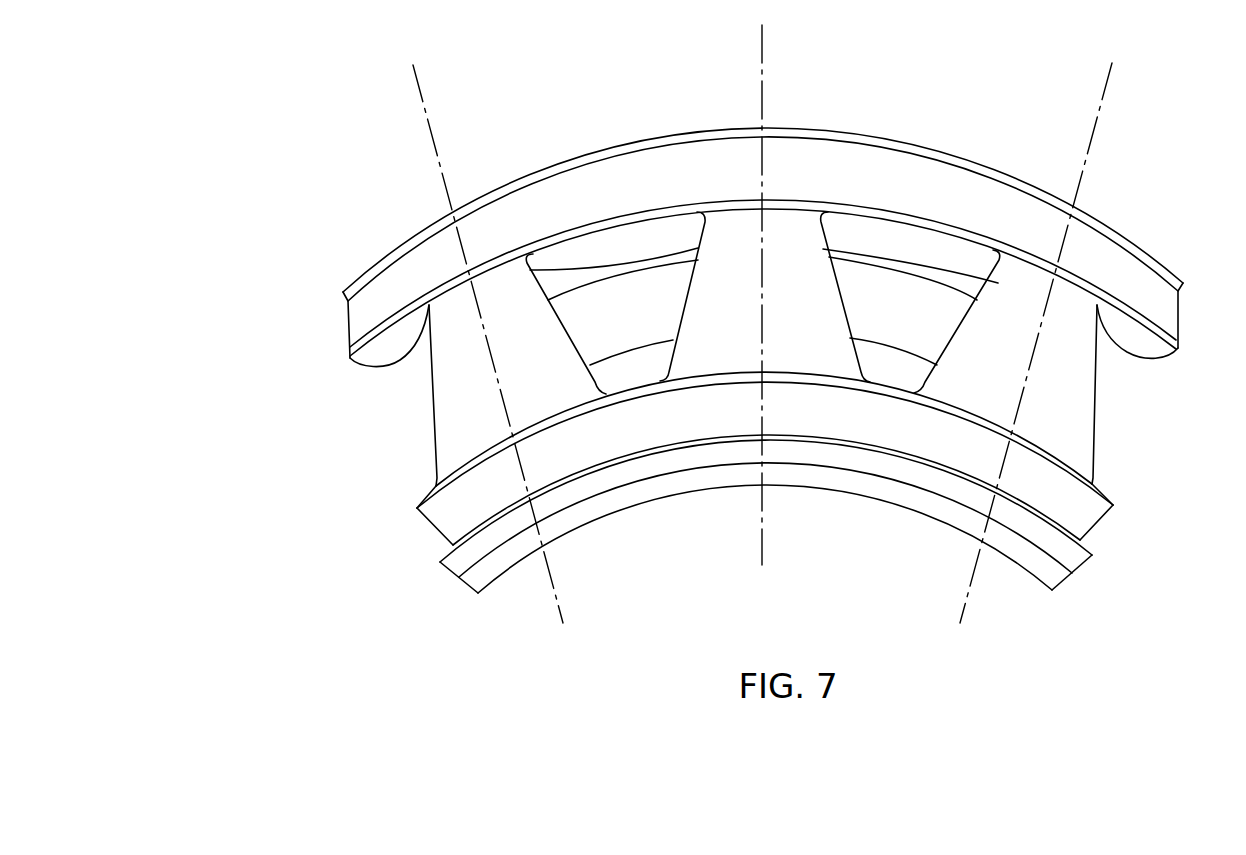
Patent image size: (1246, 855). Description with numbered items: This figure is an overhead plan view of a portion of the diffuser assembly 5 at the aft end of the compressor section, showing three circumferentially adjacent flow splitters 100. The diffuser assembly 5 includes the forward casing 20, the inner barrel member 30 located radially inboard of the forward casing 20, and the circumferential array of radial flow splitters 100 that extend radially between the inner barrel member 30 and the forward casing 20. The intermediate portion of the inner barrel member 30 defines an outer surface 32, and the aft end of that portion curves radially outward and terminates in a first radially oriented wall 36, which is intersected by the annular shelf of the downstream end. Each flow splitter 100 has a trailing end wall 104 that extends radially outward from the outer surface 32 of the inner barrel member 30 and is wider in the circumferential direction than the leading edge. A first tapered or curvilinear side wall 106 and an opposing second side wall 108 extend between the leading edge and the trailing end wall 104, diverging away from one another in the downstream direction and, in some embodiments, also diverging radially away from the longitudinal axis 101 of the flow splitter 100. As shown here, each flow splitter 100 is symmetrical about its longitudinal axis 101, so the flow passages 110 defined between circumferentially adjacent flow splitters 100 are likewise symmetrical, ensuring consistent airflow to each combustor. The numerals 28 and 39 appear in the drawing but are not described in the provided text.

The diffuser assembly 5 is at (282, 118).
The forward casing 20 is at (328, 320).
The yoke 28 is at (433, 258).
The inner barrel member 30 is at (420, 553).
The outer surface 32 is at (603, 310).
The first radially oriented wall 36 is at (438, 512).
The inner ring flange 39 is at (457, 563).
The flow splitter 100 is at (791, 232).
The longitudinal axis 101 is at (563, 598).
The trailing end wall 104 is at (437, 367).
The first side wall 106 is at (435, 410).
The second side wall 108 is at (535, 283).
The flow passage 110 is at (648, 240).